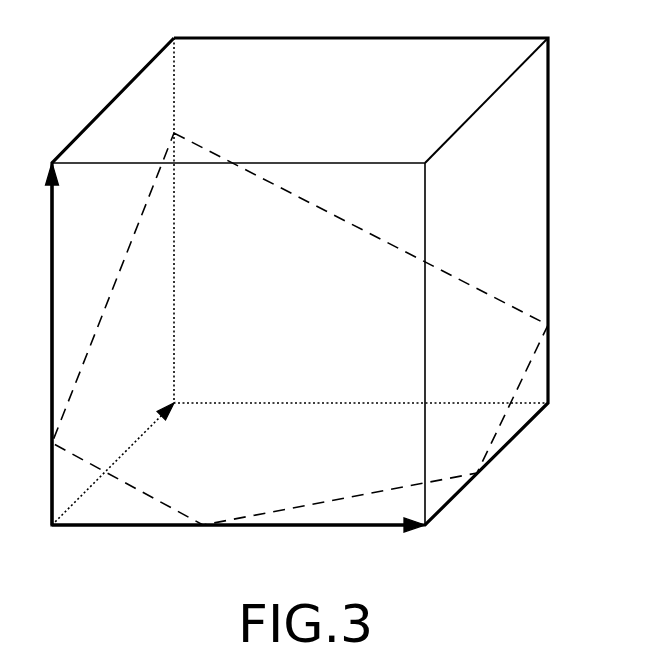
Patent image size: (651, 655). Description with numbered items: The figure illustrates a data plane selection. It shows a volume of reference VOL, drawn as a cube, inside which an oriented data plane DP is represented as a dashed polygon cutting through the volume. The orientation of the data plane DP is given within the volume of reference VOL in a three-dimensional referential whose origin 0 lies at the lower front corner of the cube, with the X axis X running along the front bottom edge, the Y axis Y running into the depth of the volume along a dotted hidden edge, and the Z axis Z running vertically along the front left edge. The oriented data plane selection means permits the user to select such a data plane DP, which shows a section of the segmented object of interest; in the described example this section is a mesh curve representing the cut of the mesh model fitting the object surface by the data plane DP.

The volume of reference VOL is at (500, 209).
The oriented data plane DP is at (500, 298).
The X axis of the three-dimensional referential X is at (238, 539).
The Y axis of the three-dimensional referential Y is at (113, 464).
The Z axis of the three-dimensional referential Z is at (39, 344).
The origin of the three-dimensional referential 0 is at (57, 549).